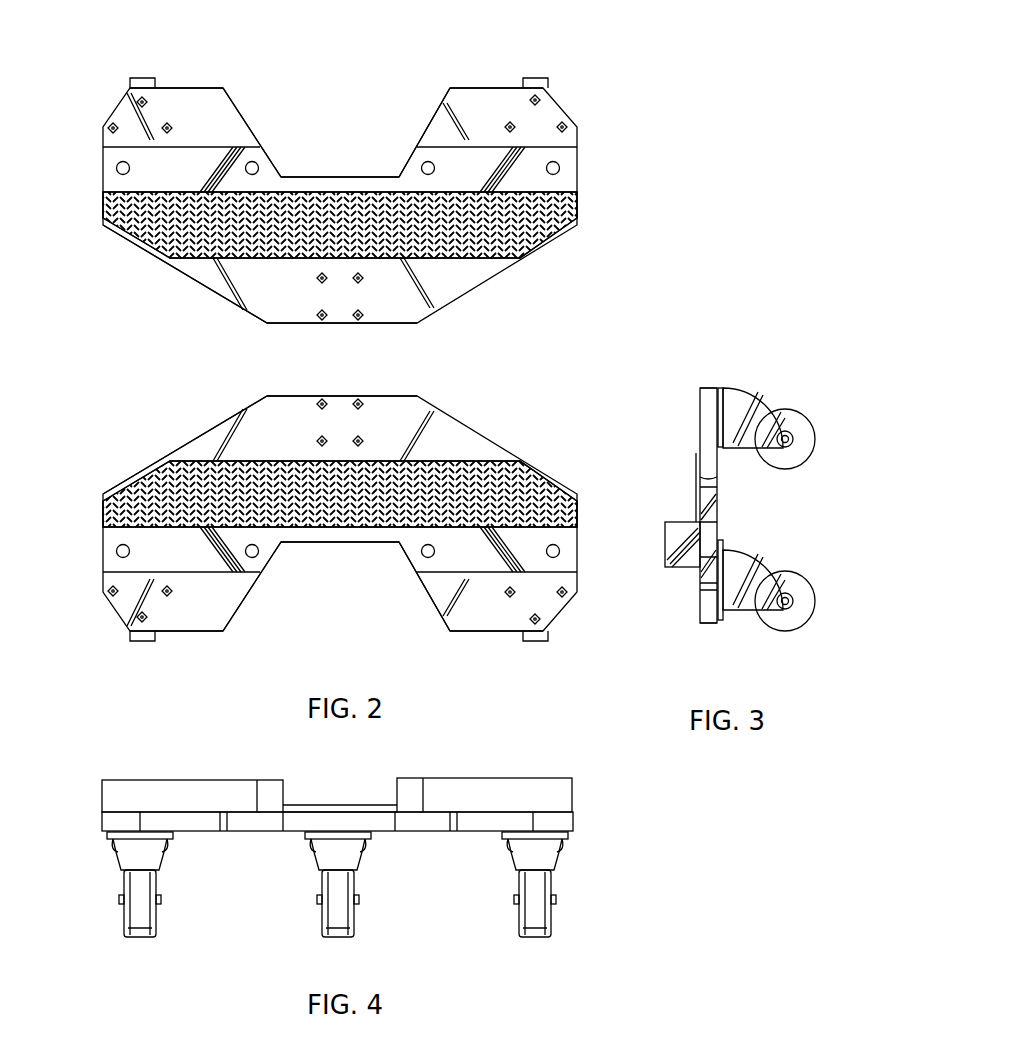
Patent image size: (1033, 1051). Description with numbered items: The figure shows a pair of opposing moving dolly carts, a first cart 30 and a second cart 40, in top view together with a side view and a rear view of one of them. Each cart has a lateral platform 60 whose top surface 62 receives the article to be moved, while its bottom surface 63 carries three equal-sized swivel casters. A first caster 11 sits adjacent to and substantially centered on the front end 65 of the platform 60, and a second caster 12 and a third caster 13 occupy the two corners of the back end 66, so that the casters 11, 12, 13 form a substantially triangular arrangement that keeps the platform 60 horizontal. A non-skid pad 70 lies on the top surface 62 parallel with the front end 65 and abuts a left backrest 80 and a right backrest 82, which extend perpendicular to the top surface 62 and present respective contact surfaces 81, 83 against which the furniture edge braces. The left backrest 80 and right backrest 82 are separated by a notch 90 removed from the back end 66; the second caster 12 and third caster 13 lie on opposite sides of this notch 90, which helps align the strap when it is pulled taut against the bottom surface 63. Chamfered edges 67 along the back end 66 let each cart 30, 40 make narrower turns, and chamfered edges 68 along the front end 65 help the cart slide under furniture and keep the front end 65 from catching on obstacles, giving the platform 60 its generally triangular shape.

In FIG. 3, the first caster 11 is at (745, 395).
In FIG. 4, the first caster 11 is at (365, 853).
In FIG. 2, the second caster 12 is at (147, 78).
In FIG. 3, the second caster 12 is at (795, 618).
In FIG. 4, the second caster 12 is at (510, 855).
In FIG. 2, the third caster 13 is at (540, 78).
In FIG. 4, the third caster 13 is at (170, 855).
In FIG. 2, the first cart 30 is at (125, 420).
In FIG. 3, the first cart 30 is at (640, 385).
In FIG. 4, the first cart 30 is at (130, 985).
In FIG. 2, the second cart 40 is at (115, 302).
In FIG. 2, the lateral platform 60 is at (190, 285).
In FIG. 3, the lateral platform 60 is at (697, 430).
In FIG. 4, the lateral platform 60 is at (262, 843).
In FIG. 2, the top surface 62 is at (340, 359).
In FIG. 3, the top surface 62 is at (700, 600).
In FIG. 4, the top surface 62 is at (205, 810).
In FIG. 3, the bottom surface 63 is at (728, 520).
In FIG. 4, the bottom surface 63 is at (226, 838).
In FIG. 2, the front end 65 is at (390, 325).
In FIG. 3, the front end 65 is at (712, 388).
In FIG. 2, the back end 66 is at (470, 88).
In FIG. 3, the back end 66 is at (717, 628).
In FIG. 4, the back end 66 is at (470, 824).
In FIG. 2, the chamfered edges 67 is at (118, 112).
In FIG. 3, the chamfered edges 67 is at (710, 610).
In FIG. 4, the chamfered edges 67 is at (110, 812).
In FIG. 2, the chamfered edges 68 is at (232, 312).
In FIG. 3, the chamfered edges 68 is at (700, 400).
In FIG. 2, the non-skid pad 70 is at (520, 250).
In FIG. 3, the non-skid pad 70 is at (718, 477).
In FIG. 4, the non-skid pad 70 is at (320, 805).
In FIG. 2, the left backrest 80 is at (103, 180).
In FIG. 3, the left backrest 80 is at (667, 556).
In FIG. 4, the left backrest 80 is at (495, 790).
In FIG. 2, the contact surface 81 is at (130, 200).
In FIG. 3, the contact surface 81 is at (683, 520).
In FIG. 2, the right backrest 82 is at (565, 152).
In FIG. 4, the right backrest 82 is at (120, 790).
In FIG. 2, the contact surface 83 is at (555, 200).
In FIG. 2, the notch 90 is at (318, 104).
In FIG. 4, the notch 90 is at (300, 820).